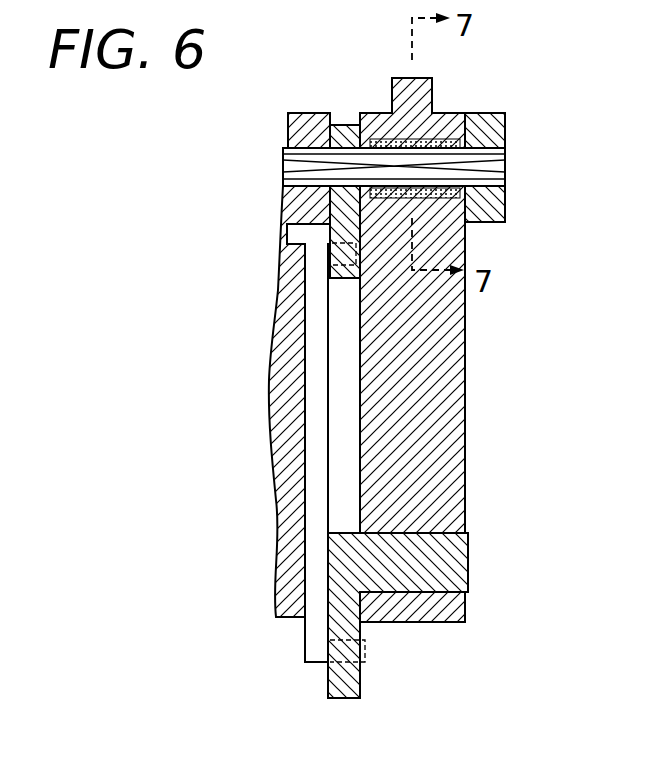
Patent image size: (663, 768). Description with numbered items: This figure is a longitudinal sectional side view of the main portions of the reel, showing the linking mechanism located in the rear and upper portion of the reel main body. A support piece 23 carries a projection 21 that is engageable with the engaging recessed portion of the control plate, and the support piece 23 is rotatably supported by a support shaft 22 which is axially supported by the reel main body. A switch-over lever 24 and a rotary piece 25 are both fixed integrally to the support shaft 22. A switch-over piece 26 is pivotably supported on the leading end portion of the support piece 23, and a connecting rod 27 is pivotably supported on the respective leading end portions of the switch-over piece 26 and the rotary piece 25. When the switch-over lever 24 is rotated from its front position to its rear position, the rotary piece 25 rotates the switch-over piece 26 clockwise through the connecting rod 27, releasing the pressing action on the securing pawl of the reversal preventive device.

The projection 21 is at (424, 89).
The support shaft 22 is at (506, 175).
The support piece 23 is at (460, 381).
The switch-over lever 24 is at (506, 127).
The rotary piece 25 is at (347, 127).
The switch-over piece 26 is at (360, 683).
The connecting rod 27 is at (316, 431).